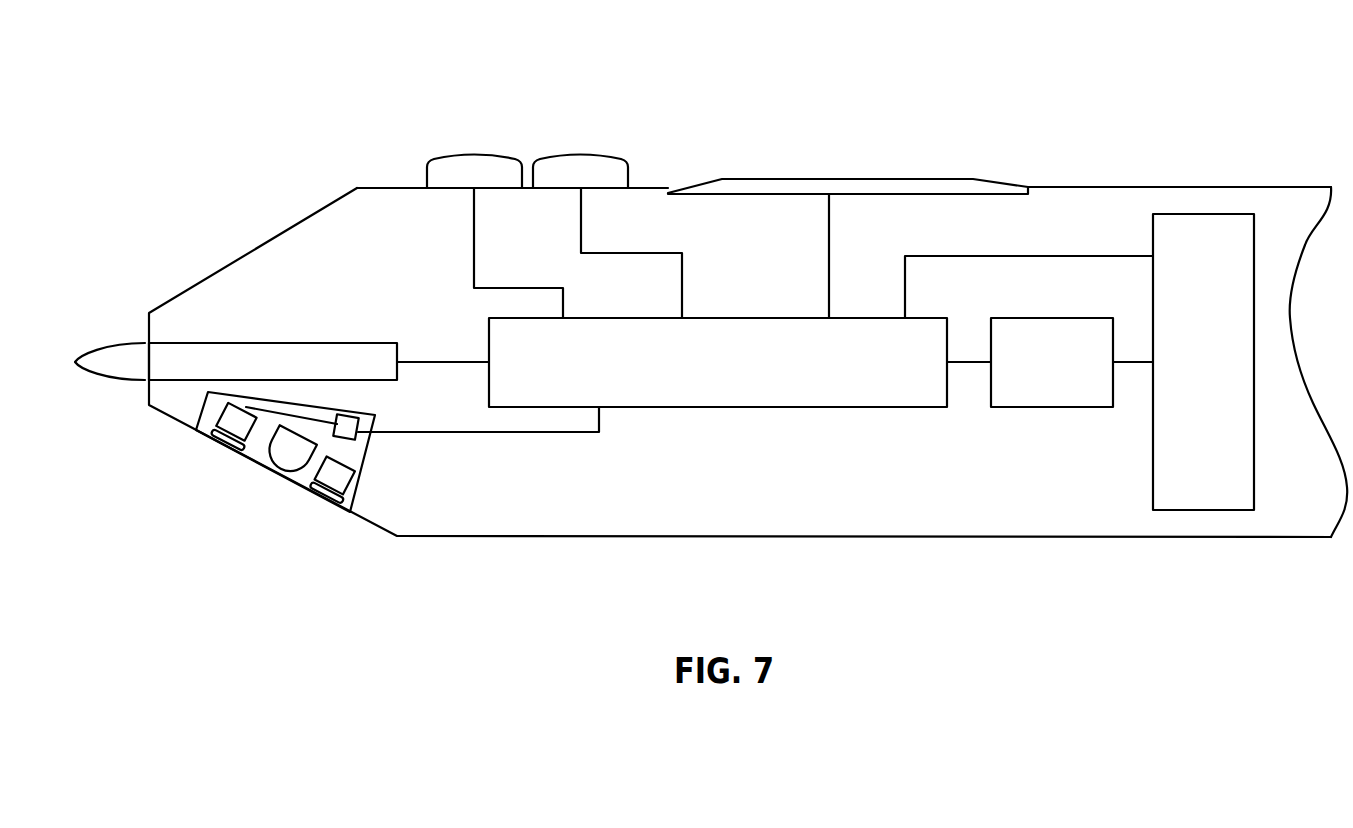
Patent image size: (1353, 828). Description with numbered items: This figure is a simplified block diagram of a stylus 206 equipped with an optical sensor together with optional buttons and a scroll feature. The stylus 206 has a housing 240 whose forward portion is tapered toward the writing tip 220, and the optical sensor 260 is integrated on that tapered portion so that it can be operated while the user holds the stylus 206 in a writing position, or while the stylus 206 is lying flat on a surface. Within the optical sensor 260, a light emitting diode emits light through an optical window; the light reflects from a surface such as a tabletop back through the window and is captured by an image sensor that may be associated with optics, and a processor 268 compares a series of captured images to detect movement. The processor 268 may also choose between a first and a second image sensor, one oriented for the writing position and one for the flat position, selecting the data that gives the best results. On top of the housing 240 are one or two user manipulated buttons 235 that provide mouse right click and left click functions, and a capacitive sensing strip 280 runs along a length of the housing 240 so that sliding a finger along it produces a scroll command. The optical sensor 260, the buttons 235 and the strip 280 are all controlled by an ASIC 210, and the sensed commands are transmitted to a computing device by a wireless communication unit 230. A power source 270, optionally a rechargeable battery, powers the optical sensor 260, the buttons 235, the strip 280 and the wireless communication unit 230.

The stylus 206 is at (984, 140).
The ASIC 210 is at (717, 407).
The writing tip 220 is at (135, 343).
The wireless communication unit 230 is at (1032, 407).
The user manipulated buttons 235 is at (483, 153).
The housing 240 is at (743, 537).
The optical sensor 260 is at (204, 405).
The processor 268 is at (360, 425).
The power source 270 is at (1195, 510).
The capacitive sensing strip 280 is at (843, 179).